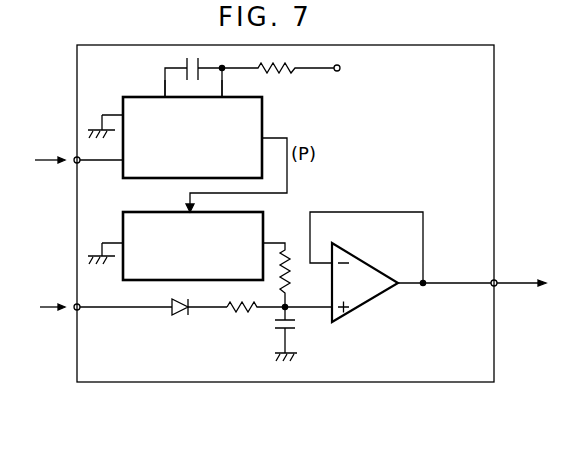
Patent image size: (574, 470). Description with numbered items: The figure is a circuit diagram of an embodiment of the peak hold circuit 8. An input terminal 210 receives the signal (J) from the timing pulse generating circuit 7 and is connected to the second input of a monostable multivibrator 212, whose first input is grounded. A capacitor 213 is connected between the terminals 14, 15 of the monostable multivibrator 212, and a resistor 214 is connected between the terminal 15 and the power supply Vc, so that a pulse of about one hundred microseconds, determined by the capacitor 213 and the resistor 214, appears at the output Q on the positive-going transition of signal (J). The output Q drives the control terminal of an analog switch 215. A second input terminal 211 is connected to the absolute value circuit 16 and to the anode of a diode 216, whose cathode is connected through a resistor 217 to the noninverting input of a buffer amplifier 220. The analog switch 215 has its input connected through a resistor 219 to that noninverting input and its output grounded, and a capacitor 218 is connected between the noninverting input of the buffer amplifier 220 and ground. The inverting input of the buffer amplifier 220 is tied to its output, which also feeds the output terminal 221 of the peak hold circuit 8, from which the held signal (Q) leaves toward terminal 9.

The timing pulse generating circuit 7 is at (44, 160).
The peak hold circuit 8 is at (494, 135).
The output signal terminal 9 is at (530, 284).
The terminal of the monostable multivibrator 14 is at (165, 93).
The terminal of the monostable multivibrator 15 is at (223, 96).
The absolute value circuit 16 is at (42, 307).
The input terminal 210 is at (75, 157).
The input terminal 211 is at (76, 311).
The monostable multivibrator 212 is at (263, 113).
The capacitor 213 is at (184, 66).
The resistor 214 is at (285, 70).
The analog switch 215 is at (123, 216).
The diode 216 is at (183, 316).
The resistor 217 is at (246, 313).
The capacitor 218 is at (296, 329).
The resistor 219 is at (290, 251).
The buffer amplifier 220 is at (357, 309).
The output terminal 221 is at (497, 279).